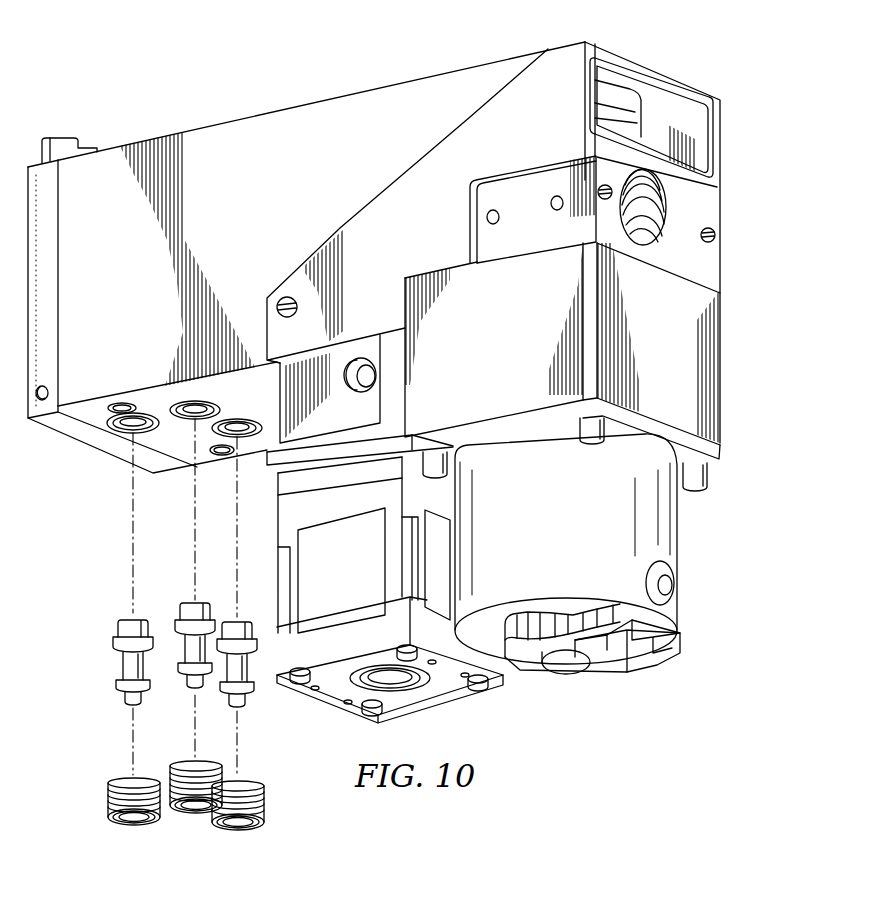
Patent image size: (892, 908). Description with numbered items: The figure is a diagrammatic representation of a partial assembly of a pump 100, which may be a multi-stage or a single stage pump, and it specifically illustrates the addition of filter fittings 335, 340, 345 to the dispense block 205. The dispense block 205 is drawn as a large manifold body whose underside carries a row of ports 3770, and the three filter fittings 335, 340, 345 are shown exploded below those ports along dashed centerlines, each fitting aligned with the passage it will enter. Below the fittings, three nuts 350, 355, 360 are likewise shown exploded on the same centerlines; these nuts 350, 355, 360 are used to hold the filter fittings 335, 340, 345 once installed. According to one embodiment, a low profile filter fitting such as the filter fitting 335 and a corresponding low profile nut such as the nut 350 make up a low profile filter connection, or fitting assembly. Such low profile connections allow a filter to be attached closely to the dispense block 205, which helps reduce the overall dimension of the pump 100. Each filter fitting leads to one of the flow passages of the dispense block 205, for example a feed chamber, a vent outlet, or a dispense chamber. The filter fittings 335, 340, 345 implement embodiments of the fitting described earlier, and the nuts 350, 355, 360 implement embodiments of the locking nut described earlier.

The pump 100 is at (766, 130).
The dispense block 205 is at (277, 133).
The fluid ports 3770 is at (133, 428).
The filter fitting 335 is at (113, 643).
The filter fitting 340 is at (190, 603).
The filter fitting 345 is at (255, 697).
The nut 350 is at (108, 797).
The nut 355 is at (196, 813).
The nut 360 is at (242, 829).